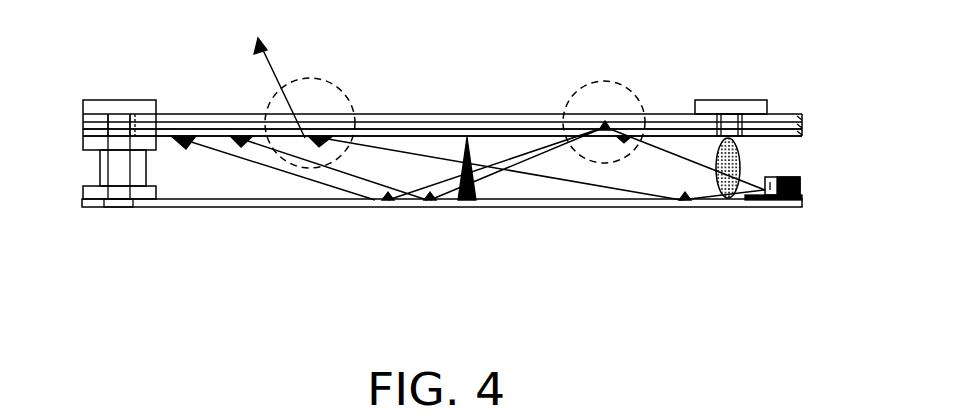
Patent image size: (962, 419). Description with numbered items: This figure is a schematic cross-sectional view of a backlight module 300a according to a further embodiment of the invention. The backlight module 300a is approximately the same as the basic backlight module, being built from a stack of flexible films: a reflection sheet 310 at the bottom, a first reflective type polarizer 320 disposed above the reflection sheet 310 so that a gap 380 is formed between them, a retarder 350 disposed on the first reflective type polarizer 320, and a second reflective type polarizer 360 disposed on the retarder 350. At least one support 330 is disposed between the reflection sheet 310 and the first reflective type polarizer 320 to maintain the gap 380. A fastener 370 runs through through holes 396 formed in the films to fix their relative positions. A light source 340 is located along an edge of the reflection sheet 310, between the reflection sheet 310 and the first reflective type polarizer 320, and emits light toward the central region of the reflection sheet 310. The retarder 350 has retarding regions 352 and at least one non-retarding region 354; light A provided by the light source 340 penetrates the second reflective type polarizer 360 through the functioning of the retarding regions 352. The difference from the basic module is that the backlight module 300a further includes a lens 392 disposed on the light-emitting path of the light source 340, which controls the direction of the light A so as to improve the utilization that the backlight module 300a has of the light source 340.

The backlight module 300a is at (451, 188).
The reflection sheet 310 is at (802, 203).
The first reflective type polarizer 320 is at (802, 136).
The support 330 is at (477, 192).
The light source 340 is at (770, 208).
The retarder 350 is at (802, 122).
The retarding region 352 is at (350, 98).
The non-retarding region 354 is at (640, 100).
The second reflective type polarizer 360 is at (802, 116).
The fastener 370 is at (118, 167).
The gap 380 is at (215, 174).
The lens 392 is at (740, 208).
The through hole 396 is at (112, 119).
The light A is at (625, 120).